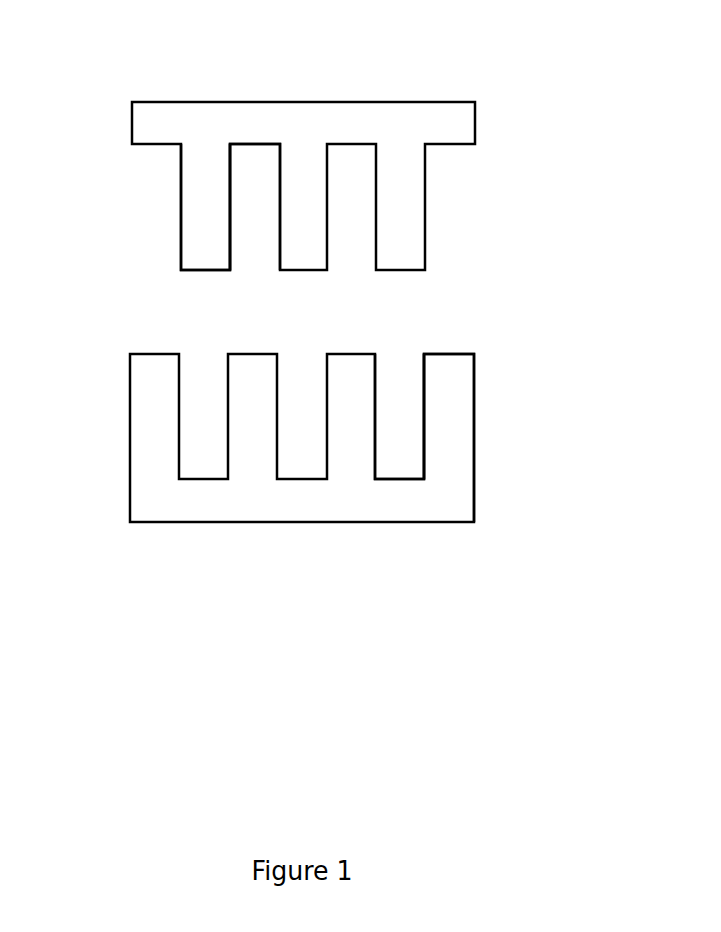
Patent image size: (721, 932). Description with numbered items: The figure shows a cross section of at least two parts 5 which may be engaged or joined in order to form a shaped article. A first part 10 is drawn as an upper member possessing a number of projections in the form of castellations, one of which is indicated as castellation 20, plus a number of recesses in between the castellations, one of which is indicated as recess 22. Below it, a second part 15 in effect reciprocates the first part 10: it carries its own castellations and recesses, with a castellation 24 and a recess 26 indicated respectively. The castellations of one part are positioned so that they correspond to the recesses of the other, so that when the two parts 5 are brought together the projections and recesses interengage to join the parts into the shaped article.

The at least two parts 5 is at (328, 306).
The first part 10 is at (301, 122).
The second part 15 is at (342, 503).
The castellation 20 is at (203, 193).
The recess 22 is at (253, 222).
The castellation 24 is at (453, 407).
The recess 26 is at (396, 435).